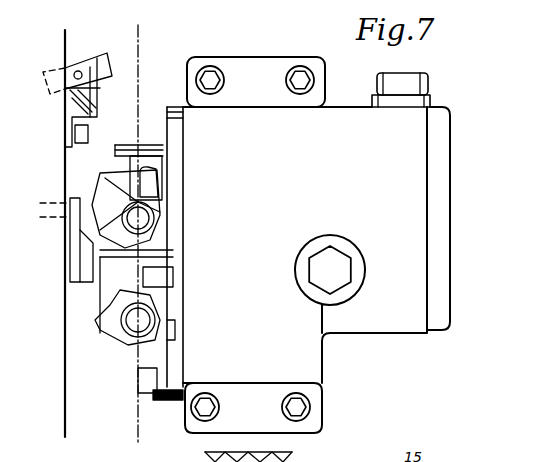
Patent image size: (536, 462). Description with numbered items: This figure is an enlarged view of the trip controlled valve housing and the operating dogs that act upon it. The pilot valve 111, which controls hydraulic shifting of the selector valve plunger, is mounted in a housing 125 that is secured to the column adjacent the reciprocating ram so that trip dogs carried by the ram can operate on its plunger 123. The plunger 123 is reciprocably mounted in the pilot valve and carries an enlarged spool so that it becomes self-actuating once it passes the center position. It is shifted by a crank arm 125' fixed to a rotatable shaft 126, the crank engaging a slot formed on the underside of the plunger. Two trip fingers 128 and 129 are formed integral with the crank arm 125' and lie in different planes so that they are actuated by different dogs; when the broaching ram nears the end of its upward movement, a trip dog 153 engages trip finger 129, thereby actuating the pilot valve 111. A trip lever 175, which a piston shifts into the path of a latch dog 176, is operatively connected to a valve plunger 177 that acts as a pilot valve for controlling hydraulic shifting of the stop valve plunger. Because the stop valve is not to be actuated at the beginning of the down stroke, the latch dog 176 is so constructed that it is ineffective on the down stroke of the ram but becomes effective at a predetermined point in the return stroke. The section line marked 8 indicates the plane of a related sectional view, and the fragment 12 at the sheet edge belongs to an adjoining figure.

The section line 8- 8 is at (112, 32).
The pilot valve 111 is at (175, 105).
The latch dog 176 is at (88, 90).
The plunger 123 is at (133, 150).
The trip finger 129 is at (100, 173).
The crank arm 125' is at (189, 183).
The rotatable shaft 126 is at (146, 215).
The trip finger 128 is at (95, 242).
The valve plunger 177 is at (163, 272).
The trip dog 153 is at (68, 268).
The trip lever 175 is at (108, 330).
The housing 125 is at (383, 89).
The adjacent figure fragment 12 is at (318, 455).